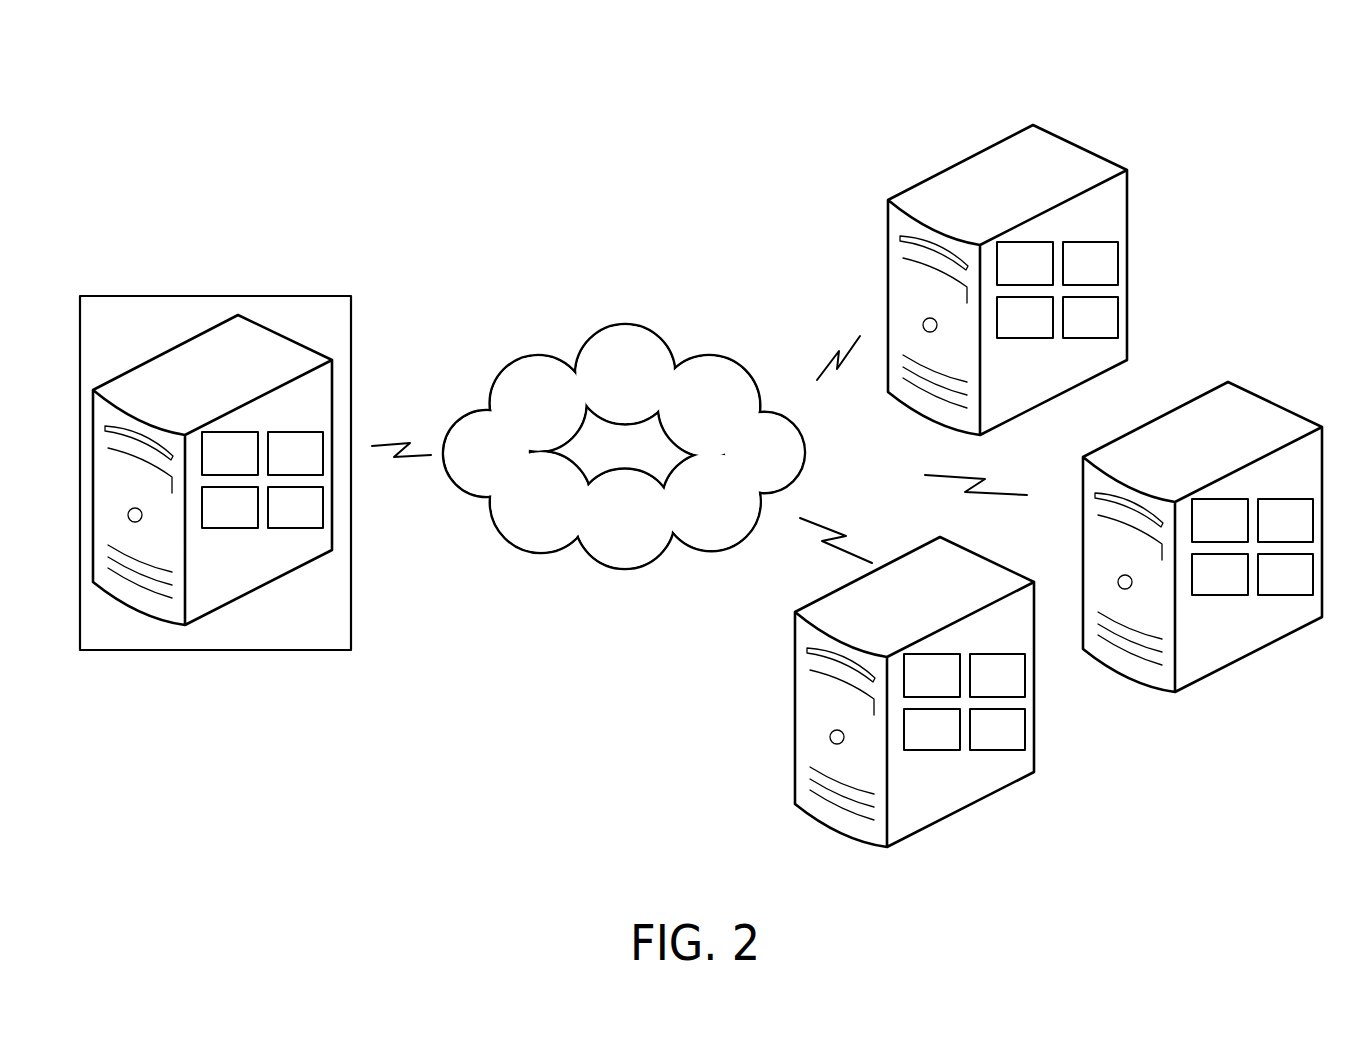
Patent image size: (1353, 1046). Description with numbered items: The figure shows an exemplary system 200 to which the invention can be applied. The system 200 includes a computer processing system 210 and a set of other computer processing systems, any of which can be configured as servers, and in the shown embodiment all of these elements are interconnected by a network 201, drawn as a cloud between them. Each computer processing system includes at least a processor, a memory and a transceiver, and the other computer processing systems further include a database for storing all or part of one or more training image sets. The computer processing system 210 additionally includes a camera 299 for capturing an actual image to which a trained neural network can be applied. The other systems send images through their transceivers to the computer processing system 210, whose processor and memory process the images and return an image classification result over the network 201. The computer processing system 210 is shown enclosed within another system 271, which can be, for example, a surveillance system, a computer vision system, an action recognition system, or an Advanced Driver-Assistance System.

The system 200 is at (178, 67).
The network 201 is at (647, 460).
The computer processing system 210 is at (212, 470).
The other system 271 is at (314, 284).
The camera 299 is at (295, 507).